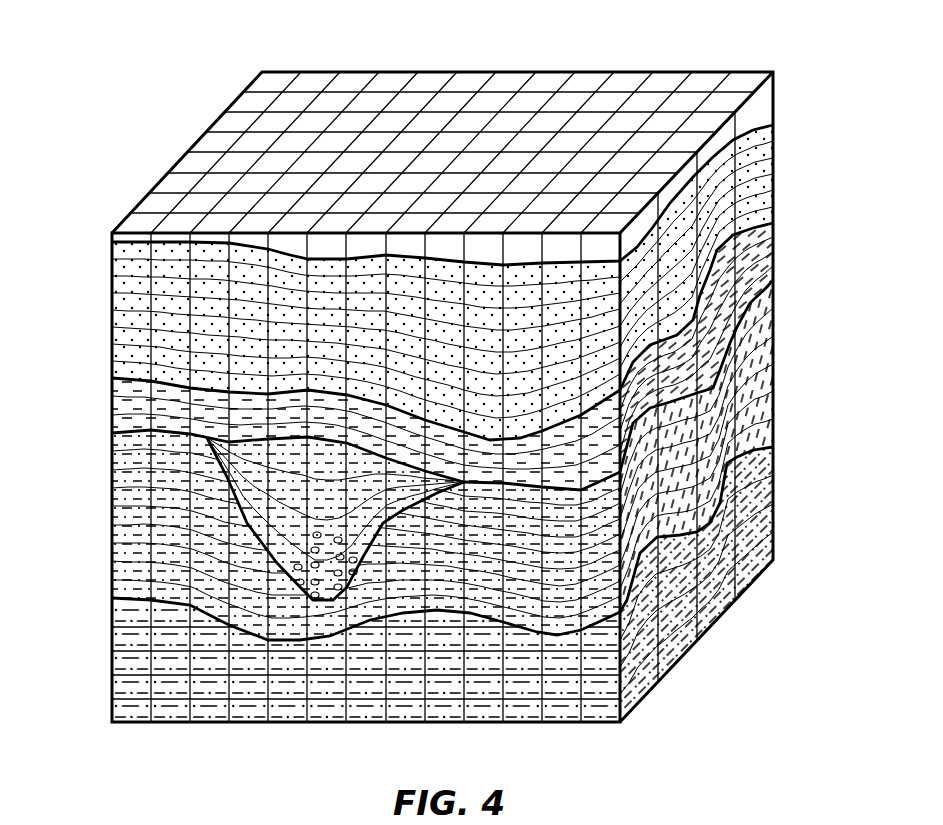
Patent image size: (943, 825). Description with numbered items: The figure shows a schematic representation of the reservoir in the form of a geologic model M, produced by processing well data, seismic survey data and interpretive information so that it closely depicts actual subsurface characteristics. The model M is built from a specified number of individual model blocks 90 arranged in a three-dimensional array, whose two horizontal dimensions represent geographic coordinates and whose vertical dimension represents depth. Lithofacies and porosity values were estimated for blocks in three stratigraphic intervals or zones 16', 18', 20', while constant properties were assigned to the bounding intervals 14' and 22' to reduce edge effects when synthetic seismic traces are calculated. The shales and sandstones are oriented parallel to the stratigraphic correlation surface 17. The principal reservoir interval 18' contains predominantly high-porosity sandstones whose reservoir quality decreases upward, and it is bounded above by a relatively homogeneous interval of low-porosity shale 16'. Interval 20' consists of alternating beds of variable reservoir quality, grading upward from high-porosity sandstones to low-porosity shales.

The geologic model M is at (149, 64).
The model blocks 90 is at (173, 185).
The bounding interval 14' is at (482, 282).
The stratigraphic interval of low-porosity shales 16' is at (482, 354).
The stratigraphic correlation surface 17 is at (128, 438).
The principal reservoir interval 18' is at (330, 535).
The stratigraphic interval of variable reservoir-quality rocks 20' is at (736, 446).
The bounding interval 22' is at (482, 584).